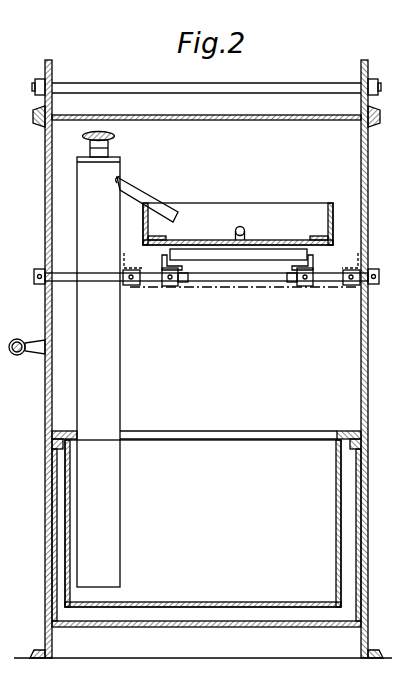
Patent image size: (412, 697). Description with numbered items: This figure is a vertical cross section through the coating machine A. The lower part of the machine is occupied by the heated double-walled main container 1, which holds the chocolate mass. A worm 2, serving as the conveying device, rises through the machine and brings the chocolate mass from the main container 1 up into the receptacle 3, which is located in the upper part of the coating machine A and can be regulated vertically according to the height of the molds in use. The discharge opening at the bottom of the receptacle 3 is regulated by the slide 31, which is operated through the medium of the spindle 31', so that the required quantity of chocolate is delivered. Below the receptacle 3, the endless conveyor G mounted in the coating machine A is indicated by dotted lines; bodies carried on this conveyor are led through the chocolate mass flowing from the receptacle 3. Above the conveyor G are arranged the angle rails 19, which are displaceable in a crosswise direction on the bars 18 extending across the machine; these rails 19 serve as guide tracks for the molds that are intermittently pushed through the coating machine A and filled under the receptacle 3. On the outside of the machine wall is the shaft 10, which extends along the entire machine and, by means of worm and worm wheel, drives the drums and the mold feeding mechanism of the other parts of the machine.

The main container 1 is at (330, 507).
The worm 2 is at (118, 390).
The receptacle 3 is at (241, 206).
The shaft 10 is at (13, 357).
The bars 18 is at (108, 281).
The angle rails 19 is at (168, 287).
The slide 31 is at (238, 241).
The spindle 31' is at (255, 228).
The coating machine A is at (261, 149).
The endless conveyor G is at (249, 289).